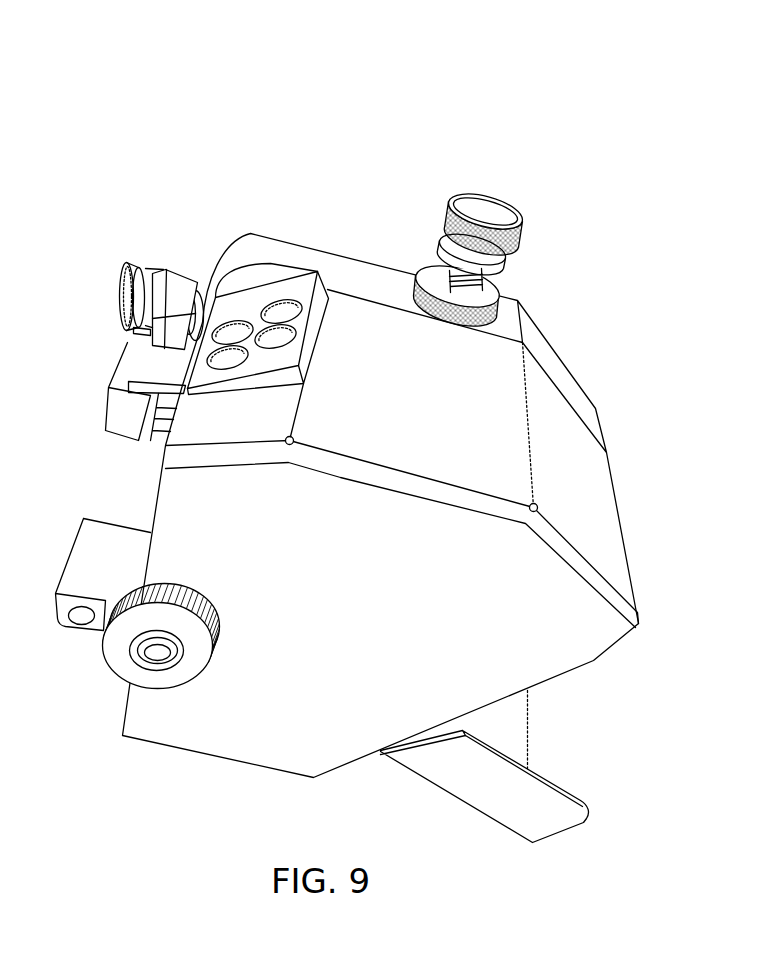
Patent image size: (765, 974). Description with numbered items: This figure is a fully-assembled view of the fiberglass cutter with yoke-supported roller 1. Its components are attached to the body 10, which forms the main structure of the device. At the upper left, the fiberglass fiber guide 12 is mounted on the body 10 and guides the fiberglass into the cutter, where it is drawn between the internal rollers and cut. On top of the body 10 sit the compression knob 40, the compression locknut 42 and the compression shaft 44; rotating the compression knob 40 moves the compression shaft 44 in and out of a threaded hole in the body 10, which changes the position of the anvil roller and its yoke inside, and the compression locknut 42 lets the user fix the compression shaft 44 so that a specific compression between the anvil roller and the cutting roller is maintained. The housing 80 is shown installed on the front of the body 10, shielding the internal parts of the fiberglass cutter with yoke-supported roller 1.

The fiberglass cutter with yoke-supported roller 1 is at (383, 114).
The body 10 is at (568, 382).
The fiberglass fiber guide 12 is at (285, 302).
The compression knob 40 is at (523, 228).
The compression locknut 42 is at (492, 287).
The compression shaft 44 is at (430, 267).
The housing 80 is at (408, 399).